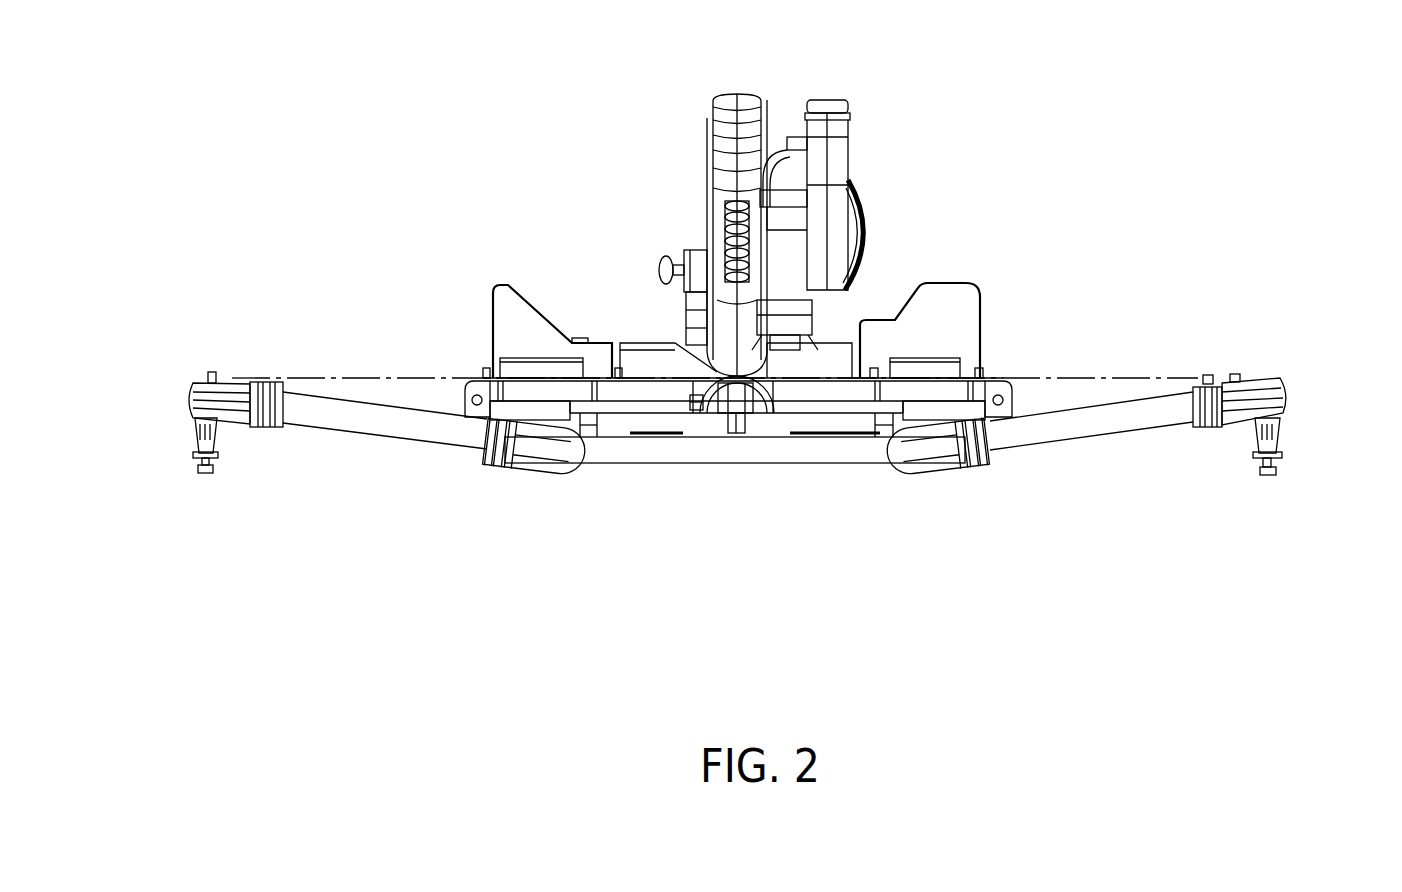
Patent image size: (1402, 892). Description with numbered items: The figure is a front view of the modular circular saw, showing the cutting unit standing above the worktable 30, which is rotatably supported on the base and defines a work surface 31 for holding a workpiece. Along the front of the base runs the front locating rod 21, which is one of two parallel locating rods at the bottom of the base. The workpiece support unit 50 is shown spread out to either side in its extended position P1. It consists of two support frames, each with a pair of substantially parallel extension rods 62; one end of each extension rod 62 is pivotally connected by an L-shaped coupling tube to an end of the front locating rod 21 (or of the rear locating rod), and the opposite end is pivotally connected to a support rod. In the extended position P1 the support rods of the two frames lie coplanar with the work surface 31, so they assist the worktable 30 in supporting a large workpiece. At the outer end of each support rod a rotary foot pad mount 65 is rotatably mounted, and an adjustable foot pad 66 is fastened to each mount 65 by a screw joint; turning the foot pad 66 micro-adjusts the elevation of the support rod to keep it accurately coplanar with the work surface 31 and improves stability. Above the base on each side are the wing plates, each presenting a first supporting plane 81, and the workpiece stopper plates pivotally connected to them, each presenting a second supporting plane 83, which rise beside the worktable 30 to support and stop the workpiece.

The front locating rod 21 is at (743, 452).
The worktable 30 is at (648, 392).
The work surface 31 is at (638, 347).
The workpiece support unit 50 is at (1210, 258).
The extension rods 62 is at (385, 427).
The rotary foot pad mount 65 is at (197, 440).
The adjustable foot pad 66 is at (207, 472).
The first supporting plane 81 is at (530, 378).
The second supporting plane 83 is at (515, 310).
The extended position P1 is at (258, 322).